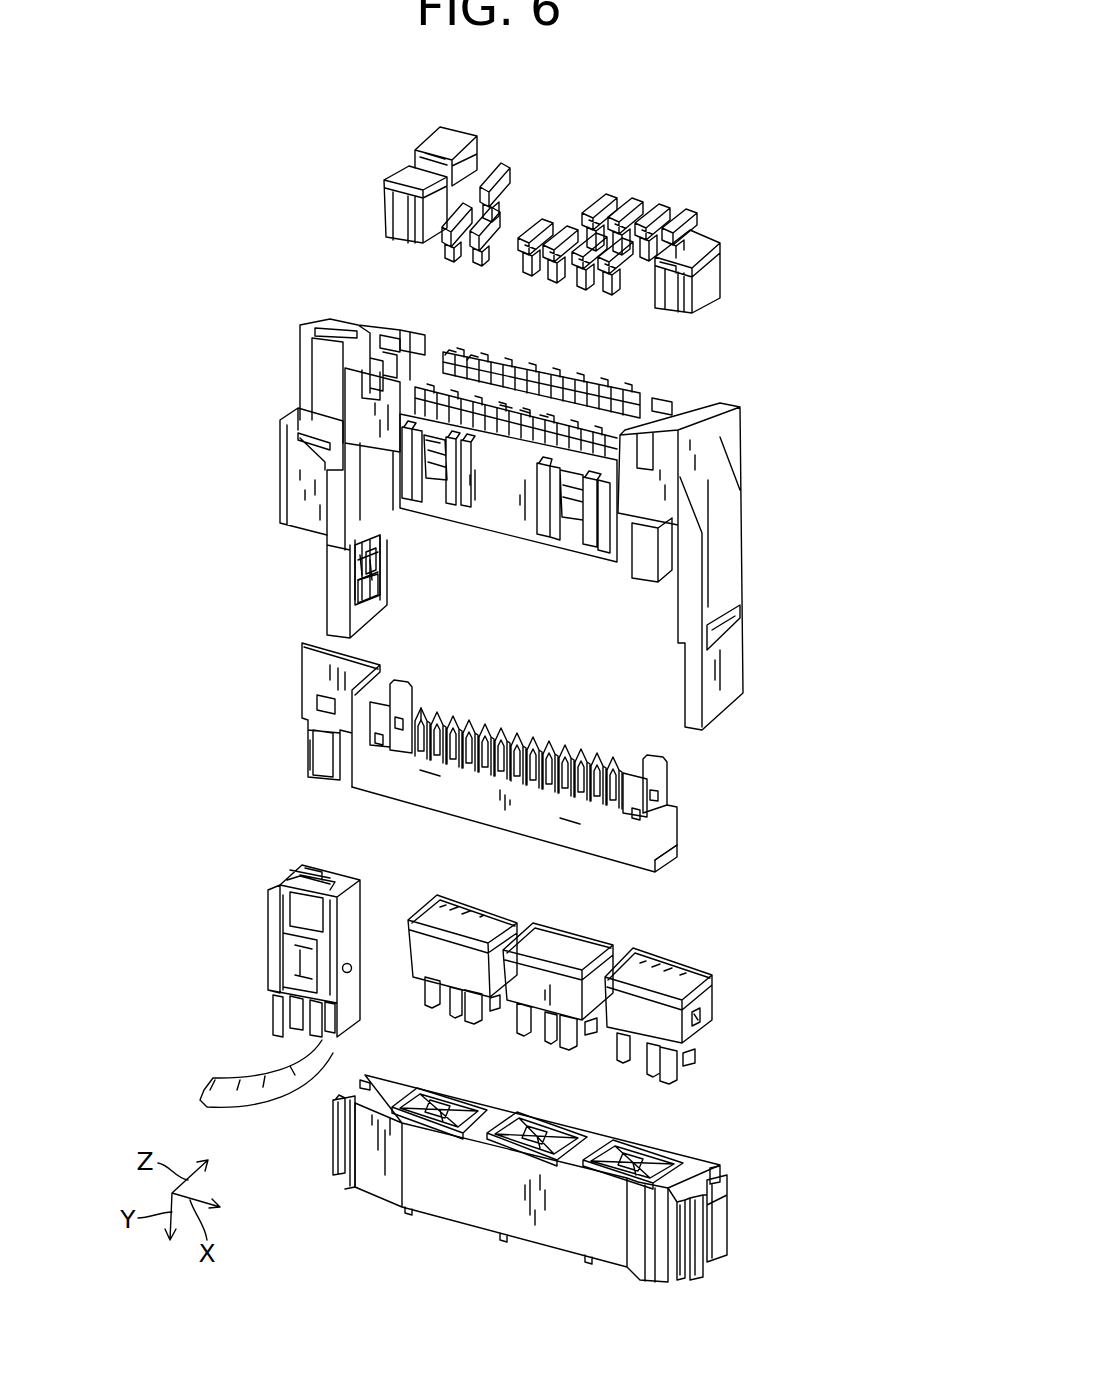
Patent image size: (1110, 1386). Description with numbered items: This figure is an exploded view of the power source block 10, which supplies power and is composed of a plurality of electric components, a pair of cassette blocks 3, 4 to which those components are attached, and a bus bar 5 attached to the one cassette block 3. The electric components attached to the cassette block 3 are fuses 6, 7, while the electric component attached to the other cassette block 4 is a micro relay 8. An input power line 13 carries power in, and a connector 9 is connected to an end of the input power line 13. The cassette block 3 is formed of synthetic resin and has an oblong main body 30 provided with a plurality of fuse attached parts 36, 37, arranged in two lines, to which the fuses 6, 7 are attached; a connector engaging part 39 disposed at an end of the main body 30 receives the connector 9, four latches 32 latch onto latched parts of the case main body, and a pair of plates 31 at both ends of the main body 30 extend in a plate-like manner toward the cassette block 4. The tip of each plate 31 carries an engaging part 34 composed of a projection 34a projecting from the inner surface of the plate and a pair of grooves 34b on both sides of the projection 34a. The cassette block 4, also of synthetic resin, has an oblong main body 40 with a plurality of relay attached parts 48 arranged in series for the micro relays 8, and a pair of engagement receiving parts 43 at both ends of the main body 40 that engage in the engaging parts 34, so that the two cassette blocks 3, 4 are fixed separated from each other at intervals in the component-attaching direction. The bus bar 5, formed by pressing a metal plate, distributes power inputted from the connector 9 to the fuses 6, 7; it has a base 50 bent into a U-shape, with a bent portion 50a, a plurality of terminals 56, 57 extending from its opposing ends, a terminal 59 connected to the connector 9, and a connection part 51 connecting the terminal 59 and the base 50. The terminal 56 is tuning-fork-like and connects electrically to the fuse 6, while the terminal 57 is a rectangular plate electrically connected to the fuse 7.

The power source block 10 is at (855, 175).
The cassette block 3 is at (758, 426).
The cassette block 4 is at (527, 1182).
The bus bar 5 is at (502, 769).
The fuse 6 is at (487, 210).
The fuse 7 is at (438, 140).
The micro relay 8 is at (650, 947).
The connector 9 is at (257, 921).
The input power line 13 is at (245, 1078).
The main body 30 is at (608, 558).
The plate 31 is at (327, 580).
The latch 32 is at (545, 502).
The engaging part 34 is at (386, 586).
The projection 34a is at (382, 592).
The groove 34b is at (375, 575).
The fuse attached part 36 is at (520, 360).
The fuse attached part 37 is at (400, 345).
The connector engaging part 39 is at (280, 452).
The main body 40 is at (635, 1243).
The engagement receiving part 43 is at (322, 1149).
The relay attached part 48 is at (600, 1150).
The base 50 is at (691, 847).
The bent portion 50a is at (668, 868).
The connection part 51 is at (302, 665).
The terminal 56 is at (500, 726).
The terminal 57 is at (397, 683).
The terminal 59 is at (308, 750).